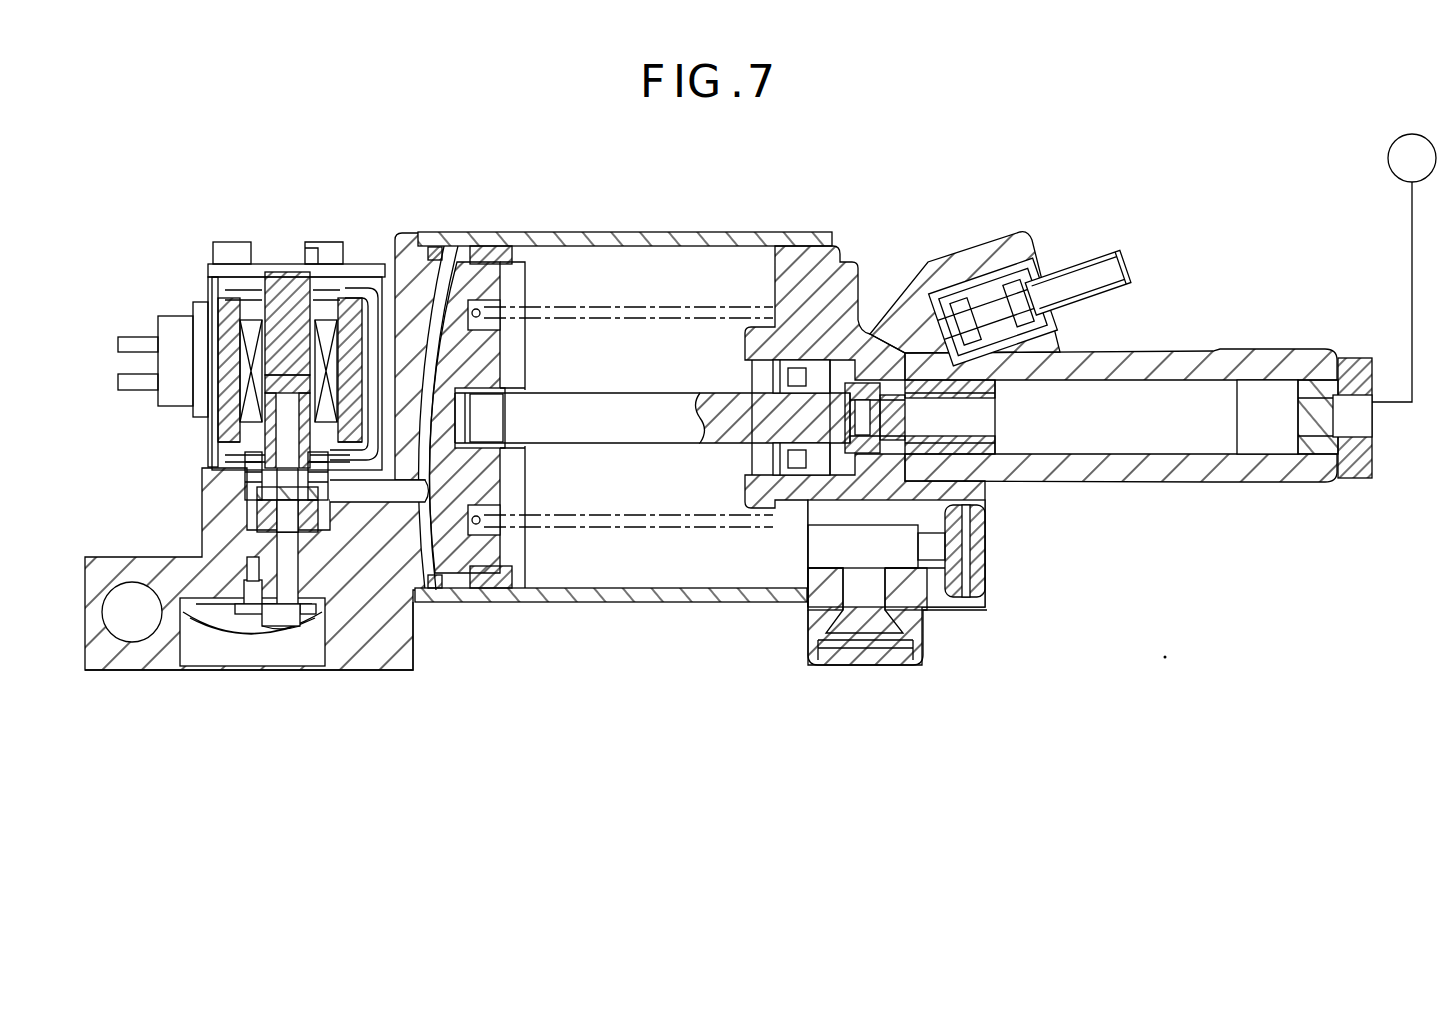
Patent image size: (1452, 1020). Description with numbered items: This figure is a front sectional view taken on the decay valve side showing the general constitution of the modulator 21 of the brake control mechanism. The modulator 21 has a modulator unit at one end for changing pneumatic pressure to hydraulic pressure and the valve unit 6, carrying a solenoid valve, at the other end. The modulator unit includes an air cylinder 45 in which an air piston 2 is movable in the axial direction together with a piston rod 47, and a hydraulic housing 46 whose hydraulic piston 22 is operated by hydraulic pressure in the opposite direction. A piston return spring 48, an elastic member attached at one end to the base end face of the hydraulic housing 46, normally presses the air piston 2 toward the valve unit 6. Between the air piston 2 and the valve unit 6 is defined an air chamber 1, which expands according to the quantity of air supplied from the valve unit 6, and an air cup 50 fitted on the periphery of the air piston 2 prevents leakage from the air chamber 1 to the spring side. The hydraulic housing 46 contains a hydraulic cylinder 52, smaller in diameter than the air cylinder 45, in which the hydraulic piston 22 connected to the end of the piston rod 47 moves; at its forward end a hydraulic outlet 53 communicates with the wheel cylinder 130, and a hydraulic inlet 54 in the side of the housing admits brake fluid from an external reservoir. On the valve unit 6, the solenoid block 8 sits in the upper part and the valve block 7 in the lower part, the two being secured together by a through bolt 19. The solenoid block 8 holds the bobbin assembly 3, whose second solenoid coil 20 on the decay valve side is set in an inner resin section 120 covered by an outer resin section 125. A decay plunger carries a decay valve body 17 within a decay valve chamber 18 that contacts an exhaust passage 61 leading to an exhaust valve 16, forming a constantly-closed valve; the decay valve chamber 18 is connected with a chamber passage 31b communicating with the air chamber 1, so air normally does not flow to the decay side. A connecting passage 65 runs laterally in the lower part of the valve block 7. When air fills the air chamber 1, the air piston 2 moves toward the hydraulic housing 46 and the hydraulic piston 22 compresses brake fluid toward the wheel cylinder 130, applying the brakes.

The air chamber 1 is at (462, 243).
The air piston 2 is at (541, 246).
The bobbin assembly 3 is at (204, 280).
The valve unit 6 is at (442, 655).
The valve block 7 is at (215, 527).
The solenoid block 8 is at (188, 307).
The exhaust valve 16 is at (210, 625).
The decay valve body 17 is at (268, 494).
The decay valve chamber 18 is at (283, 484).
The through bolt 19 is at (229, 243).
The solenoid coil 20 is at (350, 315).
The modulator 21 is at (840, 212).
The hydraulic piston 22 is at (990, 442).
The chamber passage 31b is at (375, 500).
The air cylinder 45 is at (643, 248).
The hydraulic housing 46 is at (1090, 363).
The piston rod 47 is at (661, 398).
The piston return spring 48 is at (628, 529).
The air cup 50 is at (496, 595).
The hydraulic cylinder 52 is at (1148, 436).
The hydraulic outlet 53 is at (1354, 425).
The hydraulic inlet 54 is at (1072, 282).
The exhaust passage 61 is at (289, 578).
The connecting passage 65 is at (132, 623).
The inner resin section 120 is at (223, 377).
The outer resin section 125 is at (223, 326).
The wheel cylinder 130 is at (1393, 173).